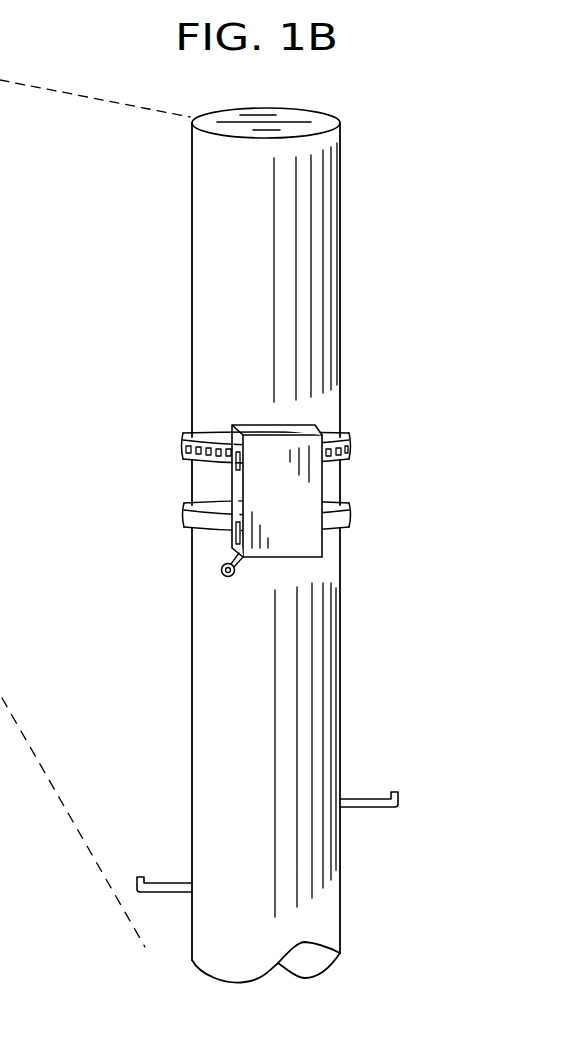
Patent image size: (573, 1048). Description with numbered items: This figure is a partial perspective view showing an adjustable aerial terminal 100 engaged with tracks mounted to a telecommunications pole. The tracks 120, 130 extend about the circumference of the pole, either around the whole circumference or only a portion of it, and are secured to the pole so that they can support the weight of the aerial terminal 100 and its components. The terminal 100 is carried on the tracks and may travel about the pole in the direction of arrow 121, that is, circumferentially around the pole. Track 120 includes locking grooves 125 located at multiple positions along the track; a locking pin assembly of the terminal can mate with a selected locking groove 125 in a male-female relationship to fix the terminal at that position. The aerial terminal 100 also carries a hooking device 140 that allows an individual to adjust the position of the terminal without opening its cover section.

The adjustable aerial terminal 100 is at (258, 485).
The track 120 is at (315, 425).
The arrow 121 is at (176, 380).
The locking grooves 125 is at (350, 448).
The track 130 is at (350, 515).
The hooking device 140 is at (221, 568).